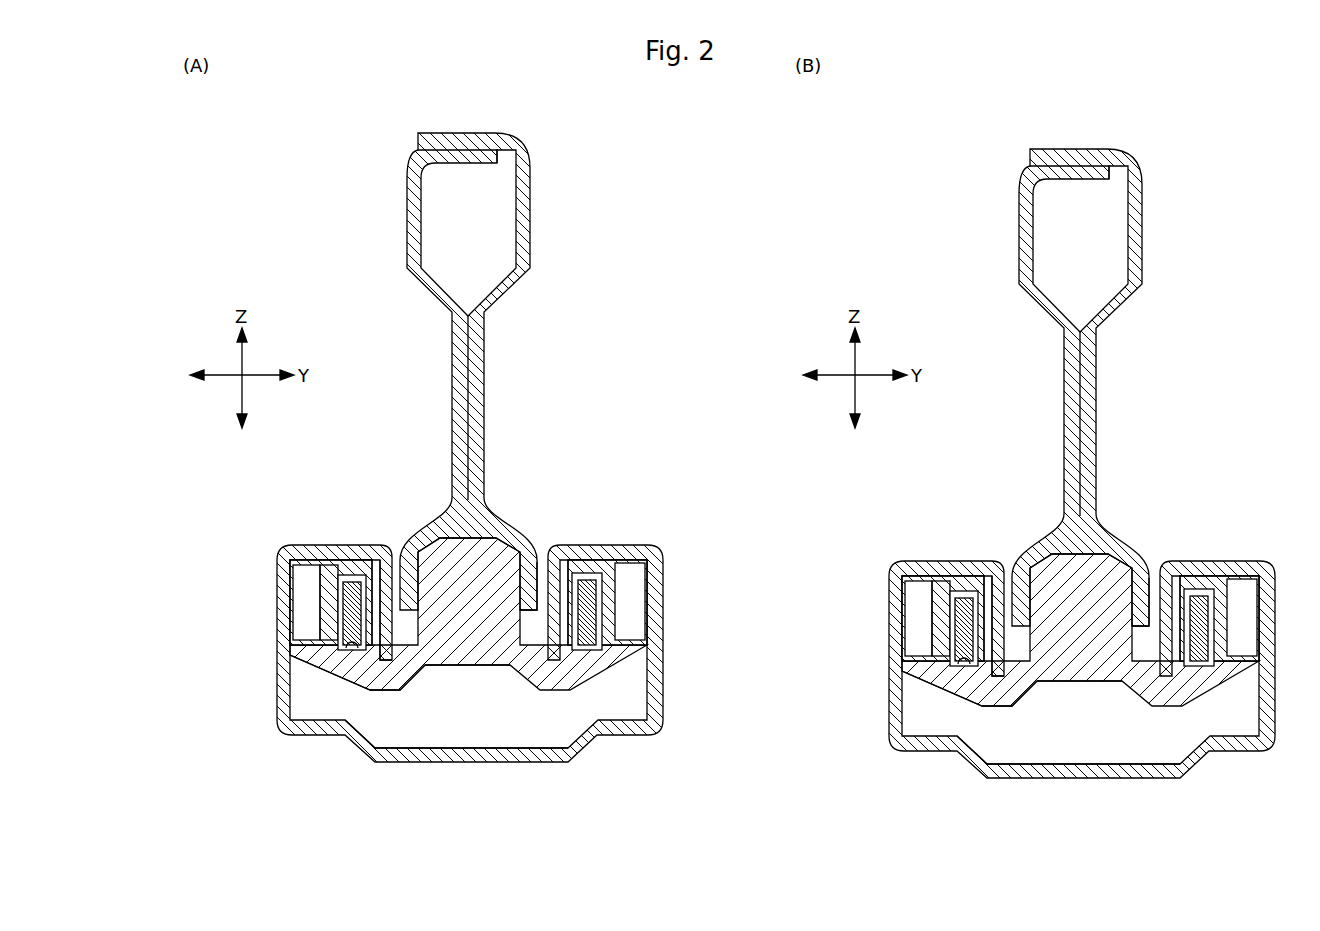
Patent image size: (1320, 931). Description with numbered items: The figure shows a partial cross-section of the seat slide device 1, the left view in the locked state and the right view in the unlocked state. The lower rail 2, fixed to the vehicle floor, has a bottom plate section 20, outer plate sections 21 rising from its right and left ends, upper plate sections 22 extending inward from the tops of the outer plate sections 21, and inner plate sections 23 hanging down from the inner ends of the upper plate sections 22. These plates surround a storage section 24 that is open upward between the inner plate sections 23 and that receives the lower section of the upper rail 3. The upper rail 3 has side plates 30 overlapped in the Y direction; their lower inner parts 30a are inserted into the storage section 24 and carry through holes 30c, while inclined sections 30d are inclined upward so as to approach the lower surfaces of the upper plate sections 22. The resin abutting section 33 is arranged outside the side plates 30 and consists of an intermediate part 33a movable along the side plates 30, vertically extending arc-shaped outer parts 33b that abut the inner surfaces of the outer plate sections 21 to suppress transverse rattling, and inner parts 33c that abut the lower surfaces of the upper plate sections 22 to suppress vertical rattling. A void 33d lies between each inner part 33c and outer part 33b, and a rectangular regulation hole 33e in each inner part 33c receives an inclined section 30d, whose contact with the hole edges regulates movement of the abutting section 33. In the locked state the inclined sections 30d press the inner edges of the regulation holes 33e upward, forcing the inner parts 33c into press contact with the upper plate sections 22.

The seat slide device 1 is at (739, 465).
The lower rail 2 is at (739, 674).
The upper rail 3 is at (774, 447).
The bottom plate section 20 is at (746, 661).
The outer plate section 21 is at (280, 680).
The upper plate section 22 is at (731, 646).
The inner plate section 23 is at (387, 575).
The storage section 24 is at (433, 728).
The side plate 30 is at (772, 379).
The inner part 30a is at (537, 598).
The through hole 30c is at (395, 670).
The inclined section 30d is at (296, 682).
The abutting section 33 is at (774, 638).
The intermediate part 33a is at (484, 660).
The outer part 33b is at (305, 605).
The inner part 33c is at (348, 580).
The void 33d is at (318, 630).
The regulation hole 33e is at (352, 652).